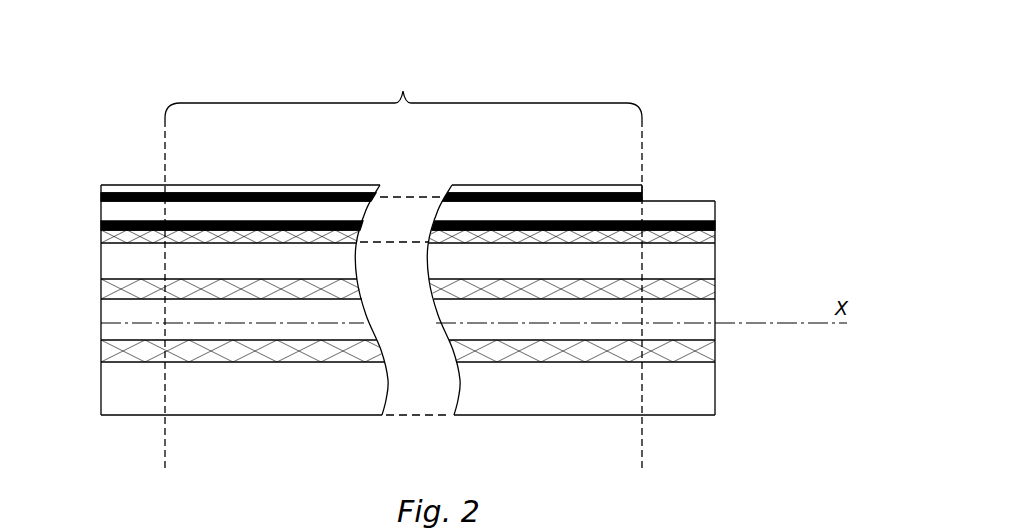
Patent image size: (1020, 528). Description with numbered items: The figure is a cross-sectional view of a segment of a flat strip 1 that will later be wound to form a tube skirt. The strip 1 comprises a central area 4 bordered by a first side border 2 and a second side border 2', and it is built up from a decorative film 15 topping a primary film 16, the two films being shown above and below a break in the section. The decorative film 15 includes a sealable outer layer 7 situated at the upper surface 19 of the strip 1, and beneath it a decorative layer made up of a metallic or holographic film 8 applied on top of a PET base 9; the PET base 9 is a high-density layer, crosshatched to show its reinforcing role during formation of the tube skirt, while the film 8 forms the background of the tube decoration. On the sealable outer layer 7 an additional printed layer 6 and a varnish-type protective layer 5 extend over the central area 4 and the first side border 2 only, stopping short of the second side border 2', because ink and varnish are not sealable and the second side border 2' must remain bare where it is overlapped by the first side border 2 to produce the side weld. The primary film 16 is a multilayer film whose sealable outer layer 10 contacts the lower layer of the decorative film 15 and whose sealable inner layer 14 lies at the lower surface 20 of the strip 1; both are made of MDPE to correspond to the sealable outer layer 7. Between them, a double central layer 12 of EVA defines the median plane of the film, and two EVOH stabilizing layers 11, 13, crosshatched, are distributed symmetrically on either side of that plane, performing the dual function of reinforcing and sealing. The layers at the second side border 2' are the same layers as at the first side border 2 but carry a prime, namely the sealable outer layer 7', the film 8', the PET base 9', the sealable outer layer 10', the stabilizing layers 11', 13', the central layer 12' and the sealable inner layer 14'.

The flat strip 1 is at (123, 84).
The first side border 2 is at (126, 292).
The second side border 2' is at (680, 292).
The central area 4 is at (403, 93).
The protective layer 5 is at (95, 180).
The printed layer 6 is at (100, 200).
The sealable outer layer 7 is at (373, 209).
The sealable outer layer at second side border 7' is at (608, 208).
The metallic or holographic film 8 is at (383, 229).
The metallic or holographic film at second side border 8' is at (595, 229).
The PET base 9 is at (373, 246).
The PET base at second side border 9' is at (601, 246).
The sealable outer layer of the primary film 10 is at (378, 263).
The sealable outer layer of the primary film at second side border 10' is at (597, 263).
The stabilizing layer 11 is at (368, 294).
The stabilizing layer at second side border 11' is at (607, 294).
The double central layer 12 is at (443, 319).
The double central layer at second side border 12' is at (600, 324).
The stabilizing layer 13 is at (366, 354).
The stabilizing layer at second side border 13' is at (617, 358).
The sealable inner layer 14 is at (212, 388).
The sealable inner layer at second side border 14' is at (611, 388).
The decorative film 15 is at (410, 232).
The primary film 16 is at (422, 330).
The upper surface 19 is at (328, 184).
The lower surface 20 is at (320, 418).